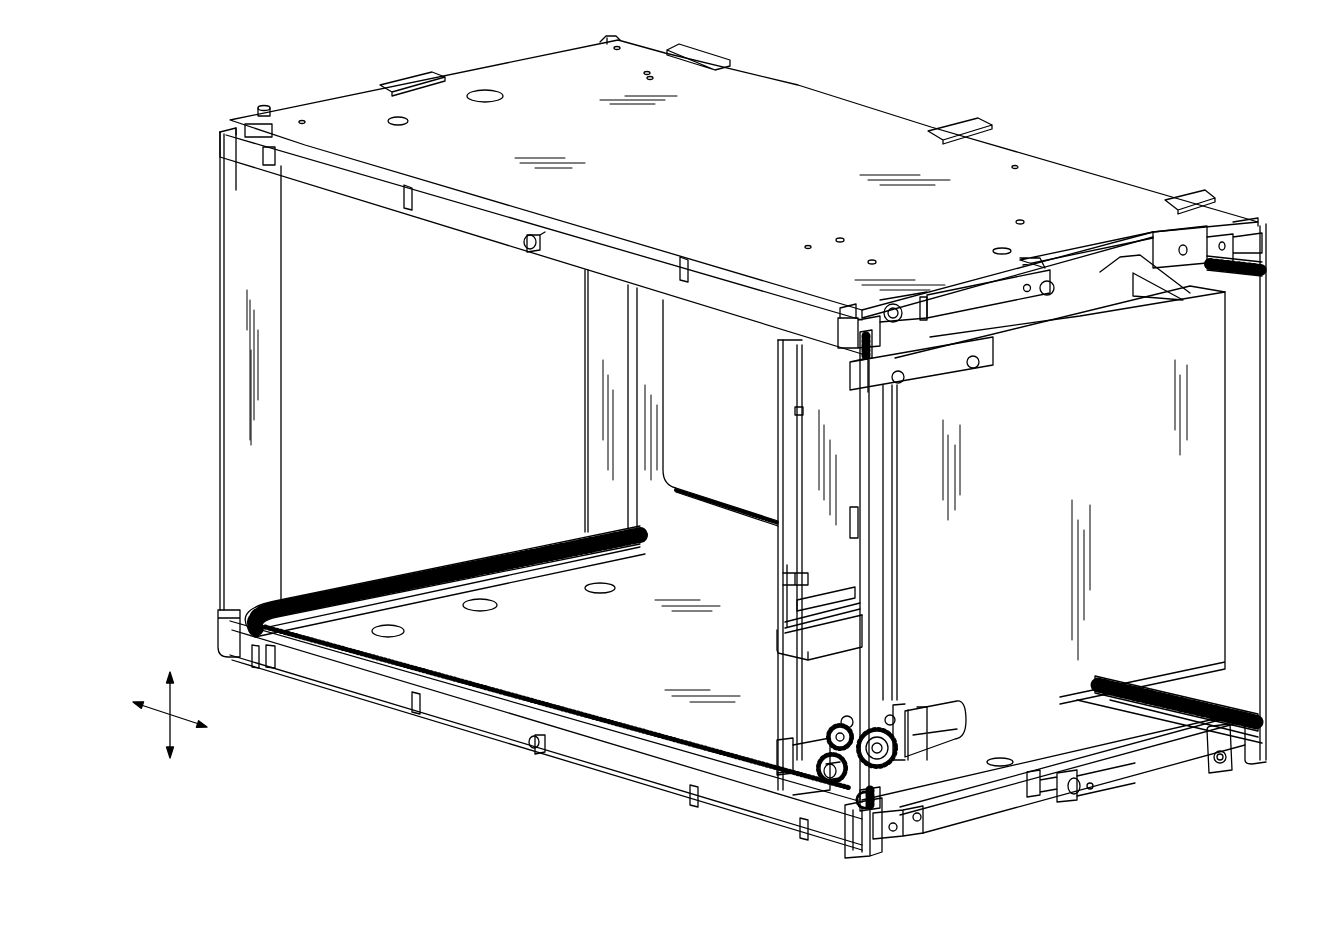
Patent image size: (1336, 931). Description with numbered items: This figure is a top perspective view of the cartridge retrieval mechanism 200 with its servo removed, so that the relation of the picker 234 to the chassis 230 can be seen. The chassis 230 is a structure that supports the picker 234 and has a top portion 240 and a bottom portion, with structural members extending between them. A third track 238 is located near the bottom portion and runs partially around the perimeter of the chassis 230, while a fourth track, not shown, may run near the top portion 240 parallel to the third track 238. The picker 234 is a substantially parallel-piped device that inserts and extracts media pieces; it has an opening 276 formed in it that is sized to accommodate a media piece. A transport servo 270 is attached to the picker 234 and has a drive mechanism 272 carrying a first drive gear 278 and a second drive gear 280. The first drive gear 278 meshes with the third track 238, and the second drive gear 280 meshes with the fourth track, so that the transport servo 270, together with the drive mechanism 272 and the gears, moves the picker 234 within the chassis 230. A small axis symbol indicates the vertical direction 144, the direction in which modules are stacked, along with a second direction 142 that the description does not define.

The cartridge retrieval mechanism 200 is at (238, 78).
The chassis 230 is at (1035, 148).
The top portion 240 is at (733, 175).
The picker 234 is at (1242, 478).
The third track 238 is at (1236, 700).
The transport servo 270 is at (958, 770).
The drive mechanism 272 is at (828, 774).
The opening 276 is at (816, 536).
The first drive gear 278 is at (878, 808).
The second drive gear 280 is at (895, 340).
The horizontal axis direction 142 is at (180, 712).
The vertical direction 144 is at (173, 725).